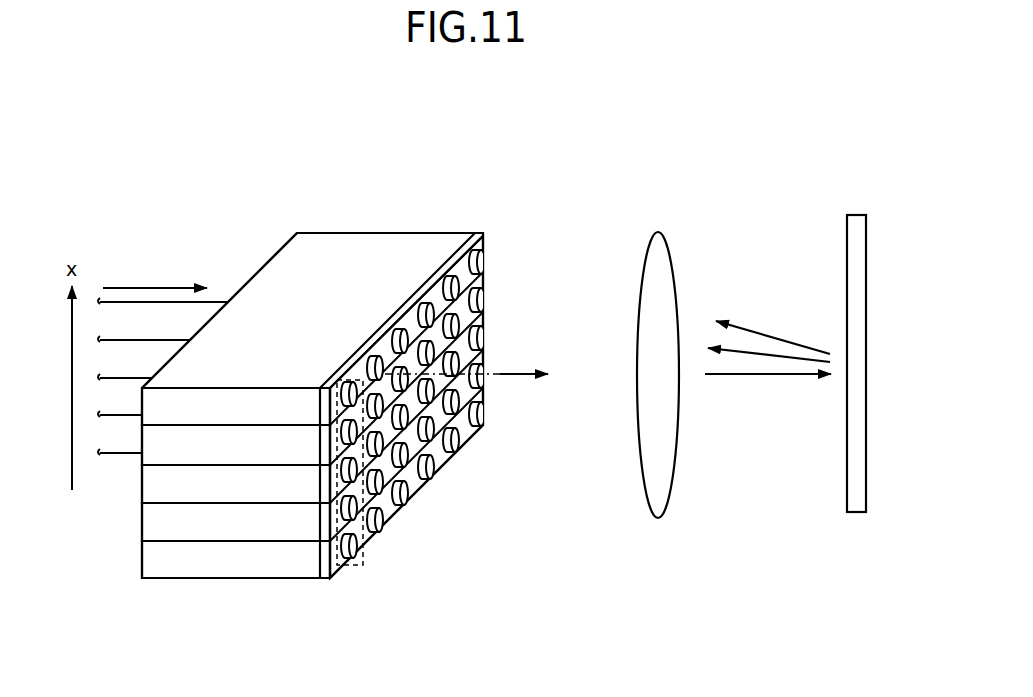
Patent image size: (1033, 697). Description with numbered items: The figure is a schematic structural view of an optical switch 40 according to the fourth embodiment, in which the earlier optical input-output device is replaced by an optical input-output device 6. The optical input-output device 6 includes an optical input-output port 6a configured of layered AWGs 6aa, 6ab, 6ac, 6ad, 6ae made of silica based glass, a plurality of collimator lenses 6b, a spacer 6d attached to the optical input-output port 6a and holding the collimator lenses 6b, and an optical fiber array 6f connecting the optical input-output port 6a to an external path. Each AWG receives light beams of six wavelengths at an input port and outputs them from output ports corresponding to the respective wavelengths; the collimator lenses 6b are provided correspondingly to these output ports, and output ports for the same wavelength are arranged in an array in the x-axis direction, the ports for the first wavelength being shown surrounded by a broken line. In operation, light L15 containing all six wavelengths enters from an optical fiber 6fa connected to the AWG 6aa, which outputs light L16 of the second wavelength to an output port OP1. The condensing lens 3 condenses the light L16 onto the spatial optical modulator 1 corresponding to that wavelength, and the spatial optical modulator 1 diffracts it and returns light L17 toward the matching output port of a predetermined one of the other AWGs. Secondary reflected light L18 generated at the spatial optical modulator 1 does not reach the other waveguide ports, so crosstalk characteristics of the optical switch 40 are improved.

The optical switch 40 is at (751, 302).
The spatial optical modulator 1 is at (853, 215).
The condensing lens 3 is at (657, 232).
The optical input-output device 6 is at (341, 400).
The optical input-output port 6a is at (443, 226).
The collimator lenses 6b is at (494, 260).
The spacer 6d is at (476, 232).
The optical fiber array 6f is at (155, 236).
The optical fiber 6fa is at (208, 300).
The AWG 6aa is at (162, 412).
The AWG 6ab is at (192, 445).
The AWG 6ac is at (232, 483).
The AWG 6ad is at (272, 521).
The AWG 6ae is at (306, 558).
The output port OP1 is at (382, 350).
The light L15 is at (192, 290).
The light L16 is at (521, 372).
The light L17 is at (745, 350).
The secondary reflected light L18 is at (805, 350).